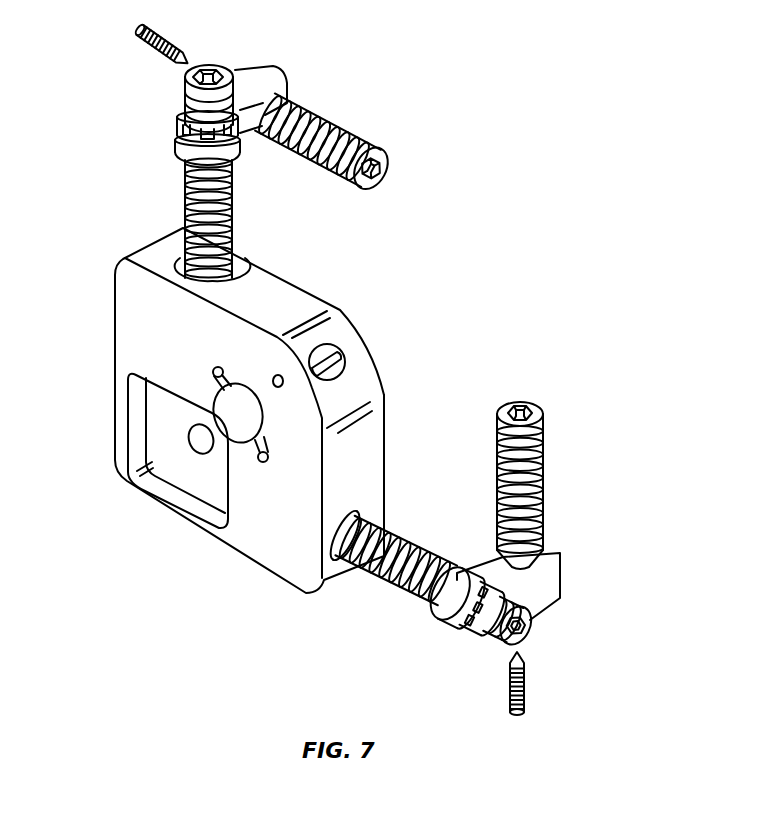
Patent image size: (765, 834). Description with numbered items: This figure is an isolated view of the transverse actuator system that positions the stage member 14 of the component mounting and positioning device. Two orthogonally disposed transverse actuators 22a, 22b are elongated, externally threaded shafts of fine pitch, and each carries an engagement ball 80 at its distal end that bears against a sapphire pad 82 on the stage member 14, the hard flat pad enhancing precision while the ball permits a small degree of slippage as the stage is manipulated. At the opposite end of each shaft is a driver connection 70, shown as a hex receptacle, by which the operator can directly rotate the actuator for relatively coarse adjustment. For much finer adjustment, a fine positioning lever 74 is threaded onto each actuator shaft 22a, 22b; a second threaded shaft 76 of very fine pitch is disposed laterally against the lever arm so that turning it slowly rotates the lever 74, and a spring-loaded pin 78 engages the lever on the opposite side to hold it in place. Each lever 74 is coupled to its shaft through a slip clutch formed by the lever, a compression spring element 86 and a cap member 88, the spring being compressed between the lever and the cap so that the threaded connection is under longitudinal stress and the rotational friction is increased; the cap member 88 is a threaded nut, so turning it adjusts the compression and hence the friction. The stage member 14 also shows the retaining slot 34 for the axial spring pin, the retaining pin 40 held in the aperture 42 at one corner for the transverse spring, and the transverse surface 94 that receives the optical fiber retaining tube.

The stage member 14 is at (130, 317).
The transverse actuator 22a is at (185, 203).
The transverse actuator 22b is at (400, 588).
The retaining slot 34 is at (230, 372).
The retaining pin 40 is at (323, 357).
The aperture 42 is at (337, 357).
The driver connection 70 is at (187, 78).
The fine positioning lever 74 is at (253, 70).
The second threaded shaft 76 is at (350, 127).
The spring-loaded pin 78 is at (192, 62).
The engagement ball 80 is at (240, 257).
The sapphire pad 82 is at (192, 282).
The compression spring element 86 is at (182, 140).
The cap member 88 is at (180, 112).
The transverse surface 94 is at (383, 390).